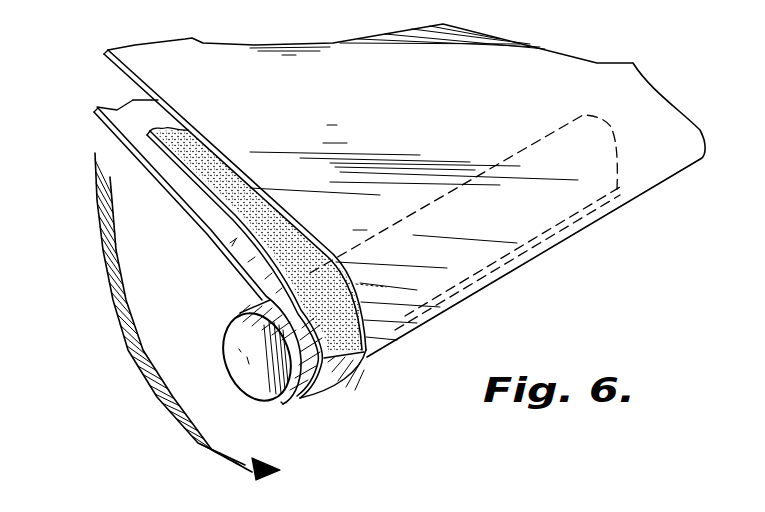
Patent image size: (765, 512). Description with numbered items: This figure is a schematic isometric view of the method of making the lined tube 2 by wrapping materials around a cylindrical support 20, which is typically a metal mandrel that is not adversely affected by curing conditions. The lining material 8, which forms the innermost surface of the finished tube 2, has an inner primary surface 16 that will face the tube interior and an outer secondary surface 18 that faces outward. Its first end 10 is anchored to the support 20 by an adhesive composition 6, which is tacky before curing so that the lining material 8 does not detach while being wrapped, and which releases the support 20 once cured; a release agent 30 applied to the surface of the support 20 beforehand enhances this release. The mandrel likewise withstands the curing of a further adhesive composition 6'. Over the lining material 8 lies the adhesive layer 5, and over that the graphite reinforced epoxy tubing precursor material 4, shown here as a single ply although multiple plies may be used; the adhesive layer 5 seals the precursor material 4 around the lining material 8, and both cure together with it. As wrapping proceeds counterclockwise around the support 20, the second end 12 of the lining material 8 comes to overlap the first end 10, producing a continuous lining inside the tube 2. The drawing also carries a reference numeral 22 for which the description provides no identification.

The tube 2 is at (610, 238).
The tubing precursor material 4 is at (598, 62).
The adhesive layer 5 is at (253, 227).
The adhesive composition 6 is at (341, 389).
The adhesive composition 6' is at (301, 418).
The lining material 8 is at (133, 100).
The first end of the lining material 10 is at (353, 363).
The second end of the lining material 12 is at (97, 107).
The inner primary surface 16 is at (157, 179).
The outer secondary surface 18 is at (128, 123).
The cylindrical support 20 is at (243, 378).
The wrap layer 22 is at (270, 301).
The release agent 30 is at (278, 337).